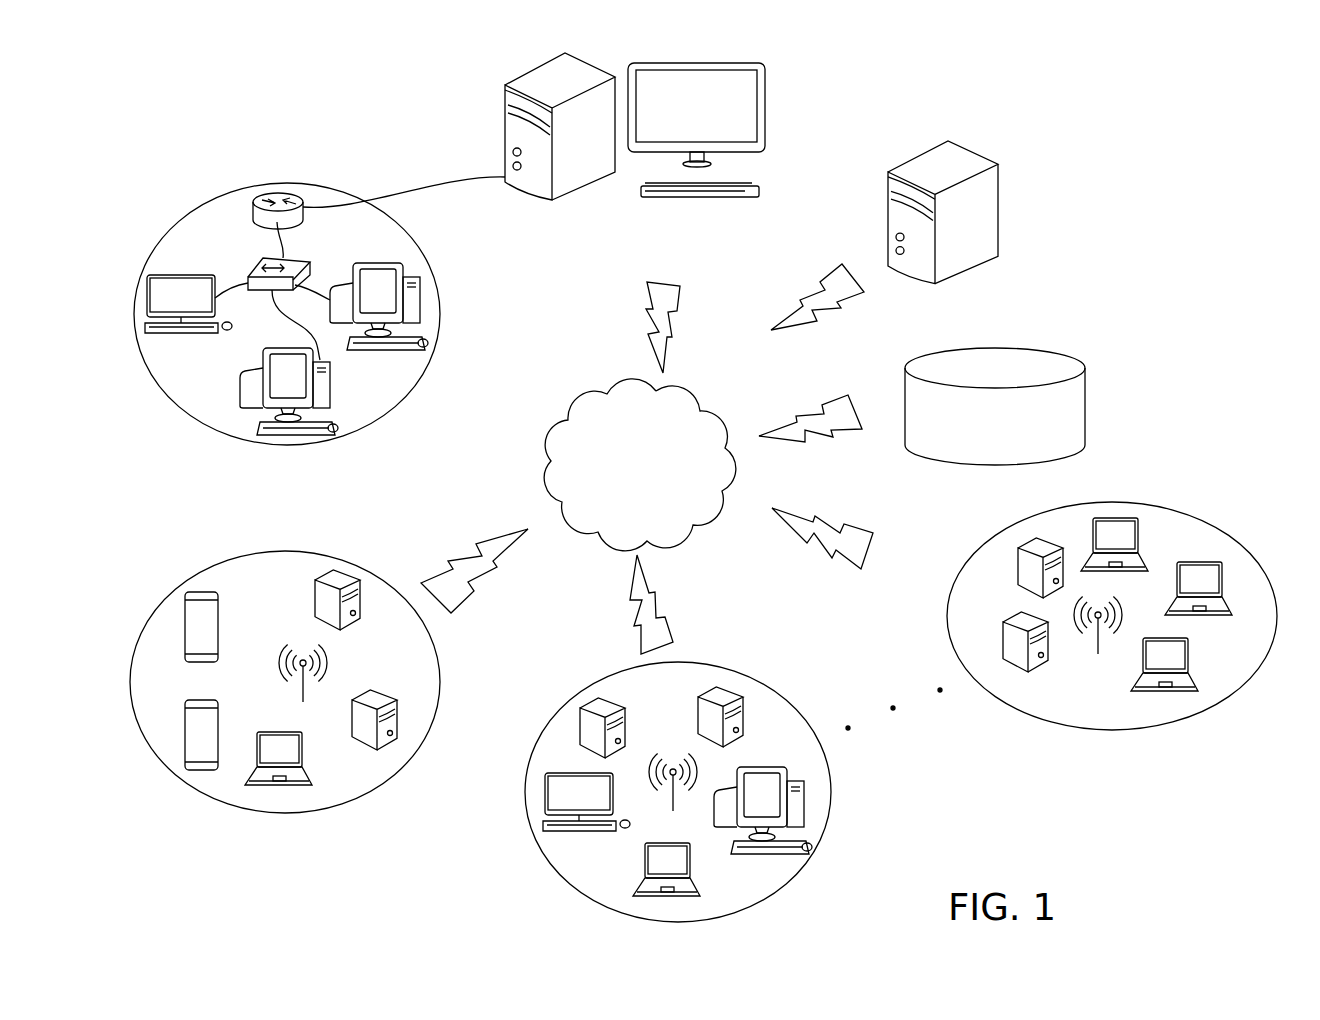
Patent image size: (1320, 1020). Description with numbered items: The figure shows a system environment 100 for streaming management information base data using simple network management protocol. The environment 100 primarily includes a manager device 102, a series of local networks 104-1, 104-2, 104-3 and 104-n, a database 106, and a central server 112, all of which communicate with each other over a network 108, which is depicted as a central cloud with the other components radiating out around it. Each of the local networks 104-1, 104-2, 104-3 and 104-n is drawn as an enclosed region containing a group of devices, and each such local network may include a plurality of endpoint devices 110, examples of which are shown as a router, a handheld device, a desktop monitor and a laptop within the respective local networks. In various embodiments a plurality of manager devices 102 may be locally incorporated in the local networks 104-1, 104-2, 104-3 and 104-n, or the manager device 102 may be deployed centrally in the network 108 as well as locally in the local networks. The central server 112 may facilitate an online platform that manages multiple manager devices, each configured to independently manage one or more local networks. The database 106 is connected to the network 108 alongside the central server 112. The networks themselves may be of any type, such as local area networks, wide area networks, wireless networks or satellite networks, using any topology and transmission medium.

The environment 100 is at (352, 94).
The manager device 102 is at (587, 62).
The local network 104-1 is at (338, 188).
The local network 104-2 is at (302, 552).
The local network 104-3 is at (777, 688).
The local network 104-n is at (1198, 518).
The database 106 is at (993, 347).
The network 108 is at (702, 393).
The endpoint device 110 is at (278, 195).
The central server 112 is at (978, 152).